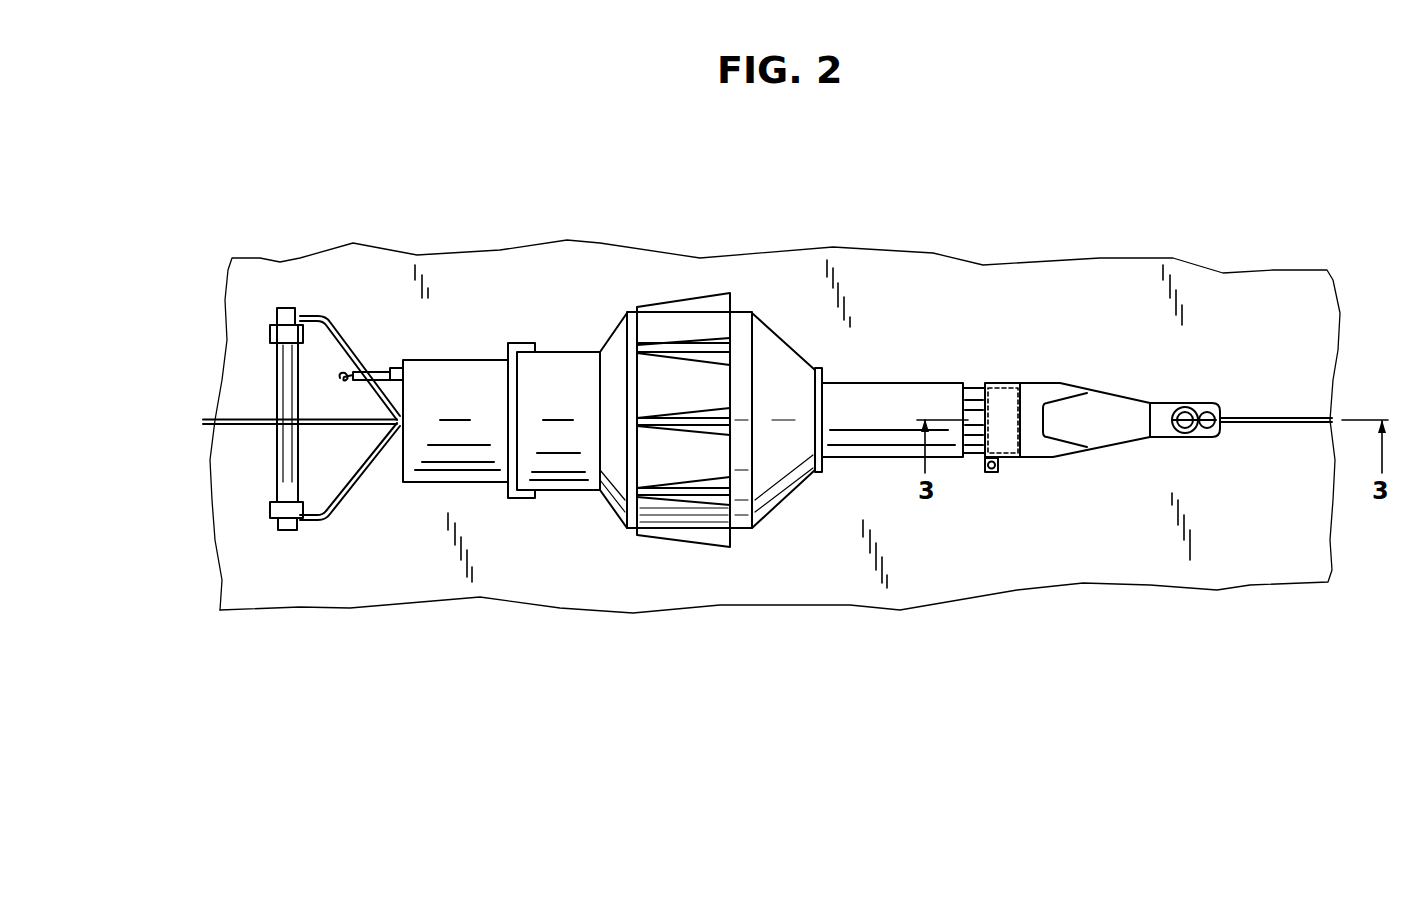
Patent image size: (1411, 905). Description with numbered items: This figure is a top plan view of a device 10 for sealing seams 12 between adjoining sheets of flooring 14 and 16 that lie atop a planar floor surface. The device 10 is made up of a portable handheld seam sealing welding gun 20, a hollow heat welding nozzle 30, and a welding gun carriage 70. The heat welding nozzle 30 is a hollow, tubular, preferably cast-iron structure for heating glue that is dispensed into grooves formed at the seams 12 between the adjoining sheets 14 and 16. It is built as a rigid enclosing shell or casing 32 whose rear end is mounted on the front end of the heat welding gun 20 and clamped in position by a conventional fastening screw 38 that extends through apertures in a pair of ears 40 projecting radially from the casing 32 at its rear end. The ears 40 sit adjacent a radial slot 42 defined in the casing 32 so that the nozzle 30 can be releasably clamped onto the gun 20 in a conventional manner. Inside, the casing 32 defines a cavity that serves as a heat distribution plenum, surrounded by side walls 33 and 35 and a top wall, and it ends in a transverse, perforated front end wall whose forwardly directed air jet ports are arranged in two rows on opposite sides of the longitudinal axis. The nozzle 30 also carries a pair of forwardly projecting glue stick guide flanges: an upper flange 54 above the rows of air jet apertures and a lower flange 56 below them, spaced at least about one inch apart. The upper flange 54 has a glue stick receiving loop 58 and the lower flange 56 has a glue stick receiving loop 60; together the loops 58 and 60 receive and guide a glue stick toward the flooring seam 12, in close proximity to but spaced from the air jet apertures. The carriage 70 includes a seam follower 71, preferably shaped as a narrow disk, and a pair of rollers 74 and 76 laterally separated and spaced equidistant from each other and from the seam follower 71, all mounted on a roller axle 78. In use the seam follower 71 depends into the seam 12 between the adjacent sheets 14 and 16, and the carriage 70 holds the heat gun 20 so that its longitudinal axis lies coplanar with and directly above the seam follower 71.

The device 10 is at (557, 297).
The seam 12 is at (1252, 418).
The sheet of flooring 14 is at (1092, 287).
The sheet of flooring 16 is at (1095, 565).
The seam sealing welding gun 20 is at (748, 310).
The heat welding nozzle 30 is at (1067, 373).
The casing 32 is at (1097, 438).
The side wall 33 is at (1015, 458).
The side wall 35 is at (1000, 420).
The fastening screw 38 is at (993, 473).
The ears 40 is at (988, 473).
The radial slot 42 is at (1020, 423).
The upper flange 54 is at (1160, 430).
The lower flange 56 is at (1213, 433).
The glue stick receiving loop 58 is at (1183, 412).
The glue stick receiving loop 60 is at (1205, 410).
The welding gun carriage 70 is at (363, 498).
The seam follower 71 is at (273, 417).
The roller 74 is at (270, 510).
The roller 76 is at (272, 330).
The roller axle 78 is at (280, 455).